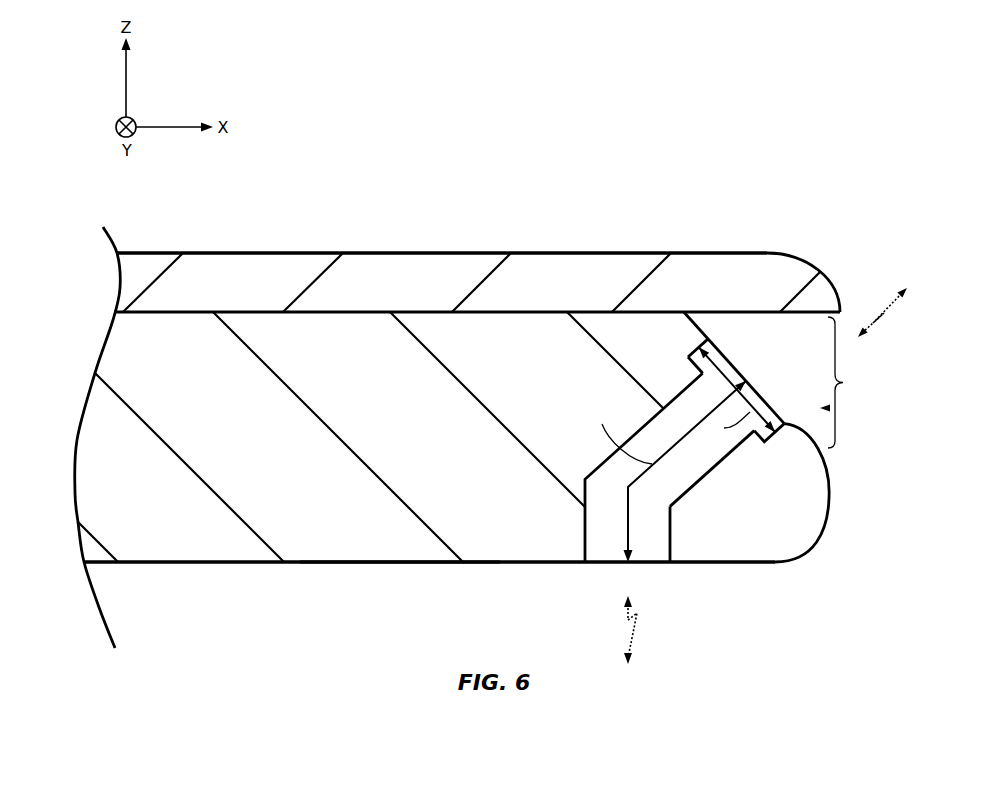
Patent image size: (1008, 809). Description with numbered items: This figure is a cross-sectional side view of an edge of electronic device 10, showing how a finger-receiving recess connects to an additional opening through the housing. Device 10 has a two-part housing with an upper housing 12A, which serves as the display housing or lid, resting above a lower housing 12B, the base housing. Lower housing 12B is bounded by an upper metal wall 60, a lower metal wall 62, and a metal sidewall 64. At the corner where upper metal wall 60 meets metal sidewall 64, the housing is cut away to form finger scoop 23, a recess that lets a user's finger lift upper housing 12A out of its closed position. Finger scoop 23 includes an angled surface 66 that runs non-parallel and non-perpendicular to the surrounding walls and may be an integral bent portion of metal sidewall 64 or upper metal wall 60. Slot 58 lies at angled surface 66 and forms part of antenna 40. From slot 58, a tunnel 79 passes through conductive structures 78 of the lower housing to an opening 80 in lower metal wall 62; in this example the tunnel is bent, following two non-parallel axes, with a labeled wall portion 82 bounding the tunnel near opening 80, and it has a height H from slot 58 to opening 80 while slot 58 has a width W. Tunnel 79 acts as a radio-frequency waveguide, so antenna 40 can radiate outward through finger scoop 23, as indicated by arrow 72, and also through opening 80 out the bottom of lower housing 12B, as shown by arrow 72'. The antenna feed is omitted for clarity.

The electronic device 10 is at (535, 132).
The upper housing 12A is at (286, 257).
The lower housing 12B is at (59, 313).
The upper metal wall 60 is at (387, 299).
The conductive structures 78 is at (323, 547).
The lower metal wall 62 is at (412, 572).
The angled surface 66 is at (700, 329).
The slot 58 is at (711, 336).
The tunnel 79 is at (728, 452).
The vertical wall of fin 82 is at (700, 482).
The opening 80 is at (670, 573).
The metal sidewall 64 is at (838, 510).
The finger scoop 23 is at (848, 382).
The antenna 40 is at (830, 408).
The direction of motion 72 is at (890, 339).
The arrow 72' is at (667, 630).